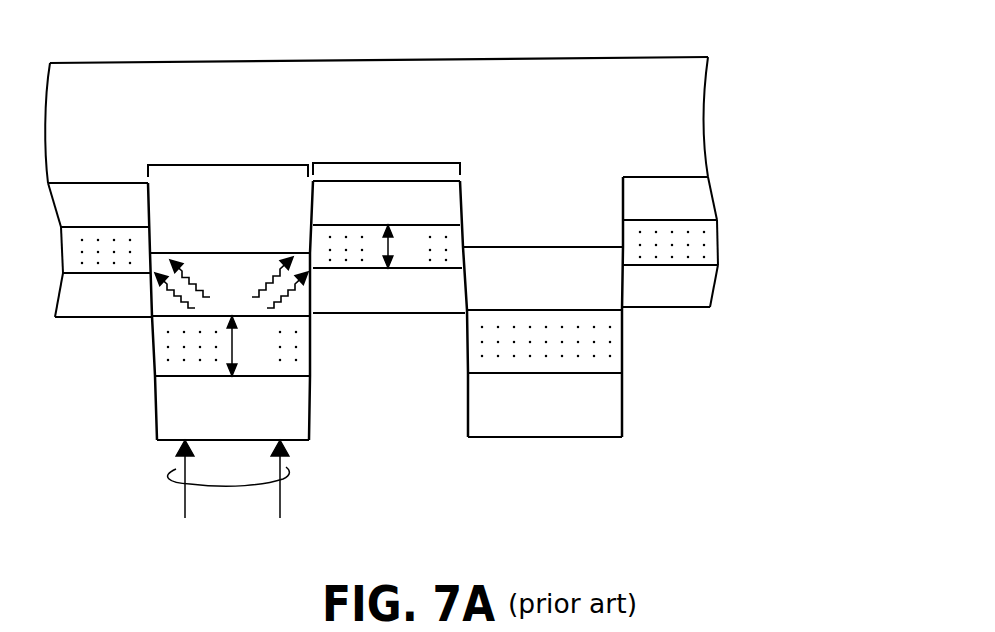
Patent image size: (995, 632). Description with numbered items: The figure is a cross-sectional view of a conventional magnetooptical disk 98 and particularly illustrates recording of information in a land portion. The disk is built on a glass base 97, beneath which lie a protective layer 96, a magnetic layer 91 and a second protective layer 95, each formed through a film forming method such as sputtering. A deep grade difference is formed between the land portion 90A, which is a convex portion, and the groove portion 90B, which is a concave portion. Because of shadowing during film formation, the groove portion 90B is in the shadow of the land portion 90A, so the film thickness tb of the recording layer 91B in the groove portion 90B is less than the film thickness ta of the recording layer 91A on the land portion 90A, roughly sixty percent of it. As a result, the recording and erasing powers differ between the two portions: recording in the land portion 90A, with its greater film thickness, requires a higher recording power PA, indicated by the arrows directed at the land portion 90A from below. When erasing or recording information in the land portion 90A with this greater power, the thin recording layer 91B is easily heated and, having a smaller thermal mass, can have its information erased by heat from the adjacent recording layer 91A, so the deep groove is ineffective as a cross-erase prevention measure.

The magnetooptical disk 98 is at (758, 52).
The glass base 97 is at (693, 123).
The protective layer 96 is at (707, 200).
The magnetic layer 91 is at (713, 248).
The recording layer on land portion 91A is at (290, 364).
The recording layer in groove portion 91B is at (450, 243).
The protective layer 95 is at (707, 293).
The land portion 90A is at (215, 164).
The groove portion 90B is at (386, 163).
The recording power for land portion PA is at (288, 474).